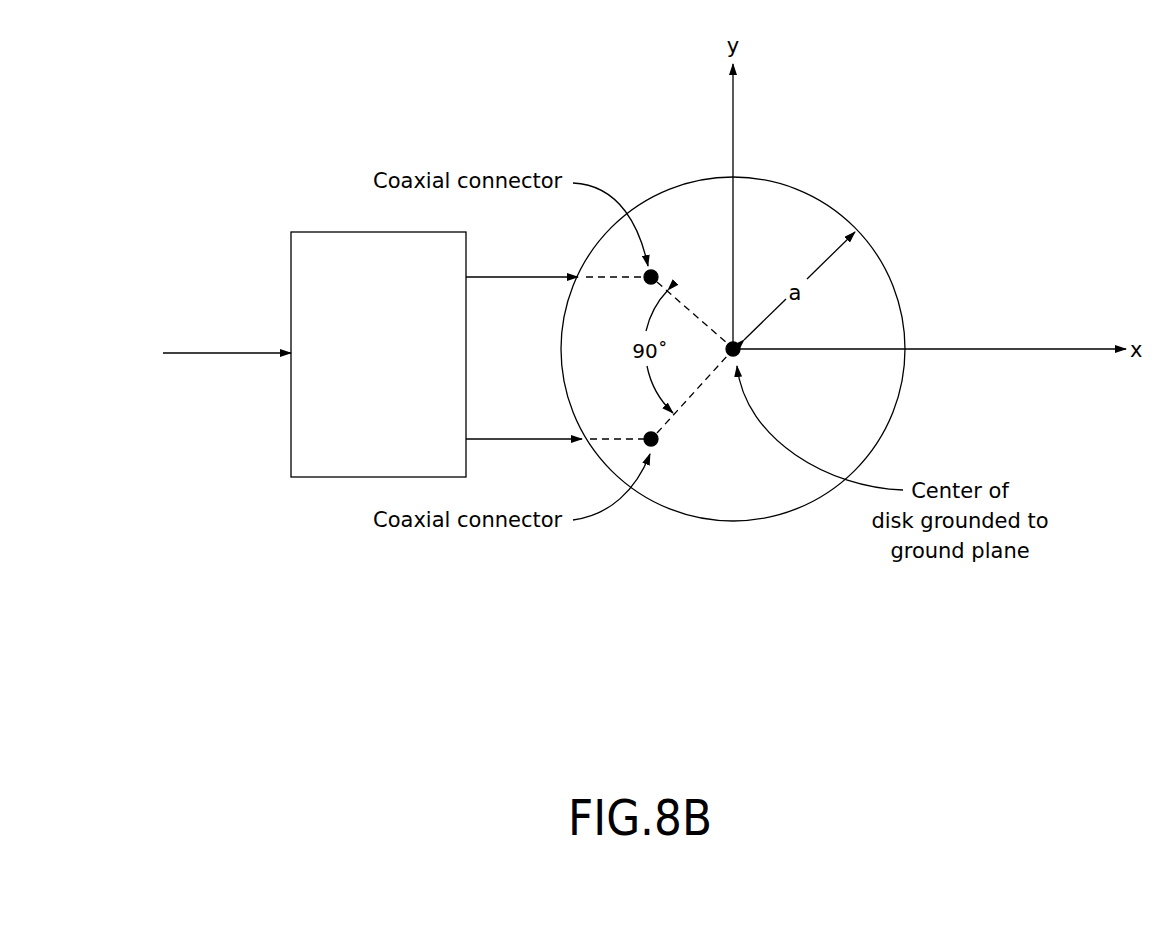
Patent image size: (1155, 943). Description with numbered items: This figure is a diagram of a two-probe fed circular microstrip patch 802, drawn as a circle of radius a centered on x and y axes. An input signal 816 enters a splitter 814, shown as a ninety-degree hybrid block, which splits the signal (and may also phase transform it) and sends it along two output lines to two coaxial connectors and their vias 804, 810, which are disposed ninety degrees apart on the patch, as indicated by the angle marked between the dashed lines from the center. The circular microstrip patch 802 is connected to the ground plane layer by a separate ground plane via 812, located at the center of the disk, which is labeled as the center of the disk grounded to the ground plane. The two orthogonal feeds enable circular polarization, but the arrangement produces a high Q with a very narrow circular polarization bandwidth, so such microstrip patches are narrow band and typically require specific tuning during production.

The circular microstrip patch 802 is at (793, 188).
The via 804 is at (658, 271).
The via 810 is at (658, 445).
The ground plane via 812 is at (739, 360).
The splitter 814 is at (300, 257).
The input signal 816 is at (230, 351).